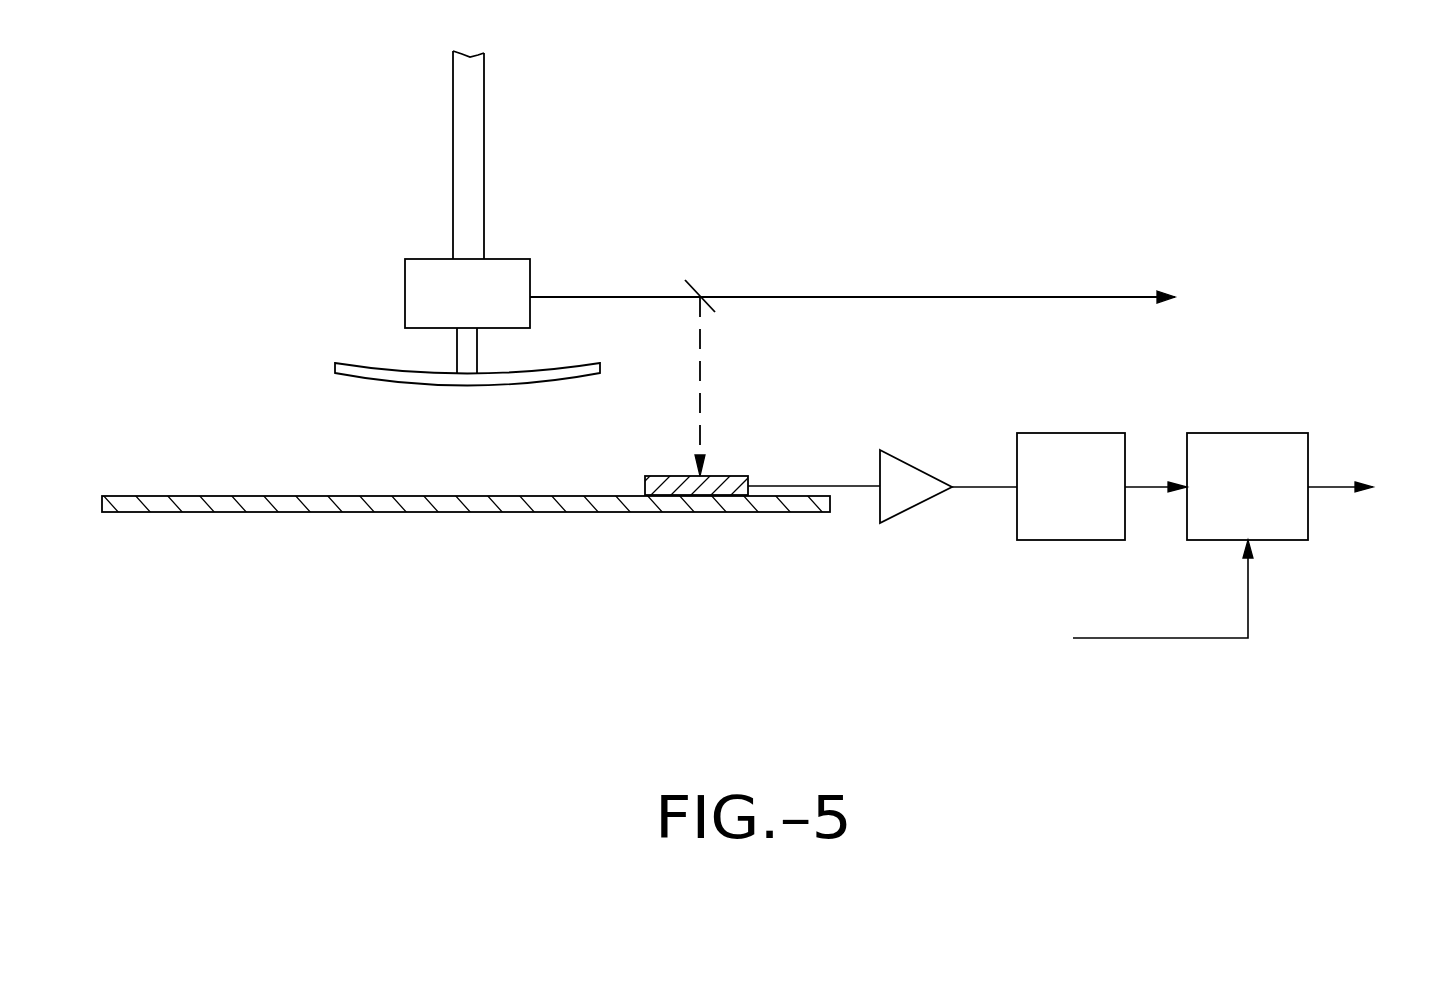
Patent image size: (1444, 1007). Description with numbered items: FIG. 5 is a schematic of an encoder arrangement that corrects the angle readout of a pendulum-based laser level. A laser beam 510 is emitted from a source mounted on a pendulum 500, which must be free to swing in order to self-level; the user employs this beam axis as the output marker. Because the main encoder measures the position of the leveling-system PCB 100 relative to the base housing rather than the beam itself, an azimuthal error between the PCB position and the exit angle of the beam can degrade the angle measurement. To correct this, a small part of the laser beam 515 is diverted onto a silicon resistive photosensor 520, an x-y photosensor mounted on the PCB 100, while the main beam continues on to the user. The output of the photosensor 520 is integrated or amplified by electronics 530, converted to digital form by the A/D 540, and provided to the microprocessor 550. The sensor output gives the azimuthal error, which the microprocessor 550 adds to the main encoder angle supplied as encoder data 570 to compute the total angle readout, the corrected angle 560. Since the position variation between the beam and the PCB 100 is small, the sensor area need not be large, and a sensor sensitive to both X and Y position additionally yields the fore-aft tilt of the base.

The PCB 100 is at (263, 505).
The pendulum 500 is at (462, 170).
The laser beam 510 is at (917, 297).
The diverted part of the laser beam 515 is at (703, 387).
The silicon resistive photosensor 520 is at (728, 477).
The electronics 530 is at (910, 477).
The A/D 540 is at (1077, 447).
The microprocessor 550 is at (1248, 445).
The corrected angle 560 is at (1369, 487).
The encoder data 570 is at (1090, 638).